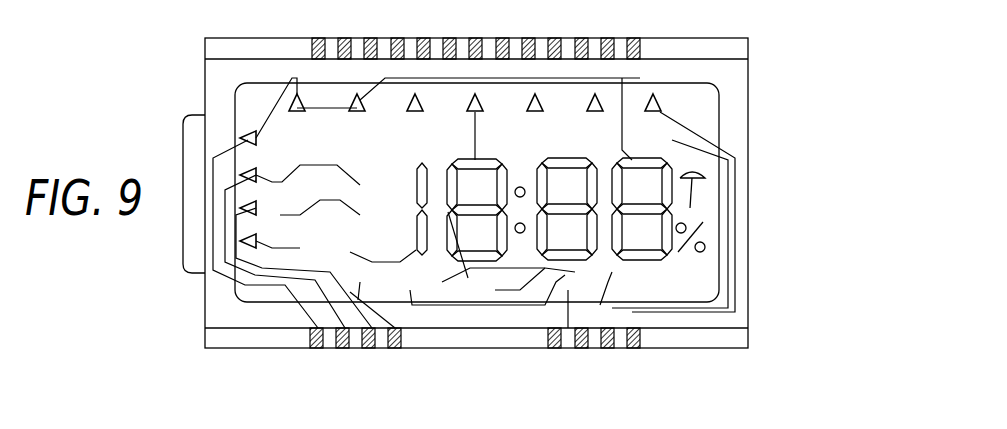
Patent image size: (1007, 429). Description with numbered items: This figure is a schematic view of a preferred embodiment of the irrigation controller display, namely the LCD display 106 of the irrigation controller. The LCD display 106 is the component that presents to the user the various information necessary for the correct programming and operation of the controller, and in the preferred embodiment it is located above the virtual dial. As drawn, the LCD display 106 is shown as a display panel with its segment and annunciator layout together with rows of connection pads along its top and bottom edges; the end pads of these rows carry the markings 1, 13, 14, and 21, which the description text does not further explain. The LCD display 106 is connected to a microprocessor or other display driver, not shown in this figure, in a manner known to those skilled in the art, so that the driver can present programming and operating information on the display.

The LCD display 106 is at (776, 113).
The pin 1 end pad 1 is at (258, 48).
The pin 13 end pad 13 is at (694, 48).
The pin 14 end pad 14 is at (257, 338).
The pin 21 end pad 21 is at (694, 338).